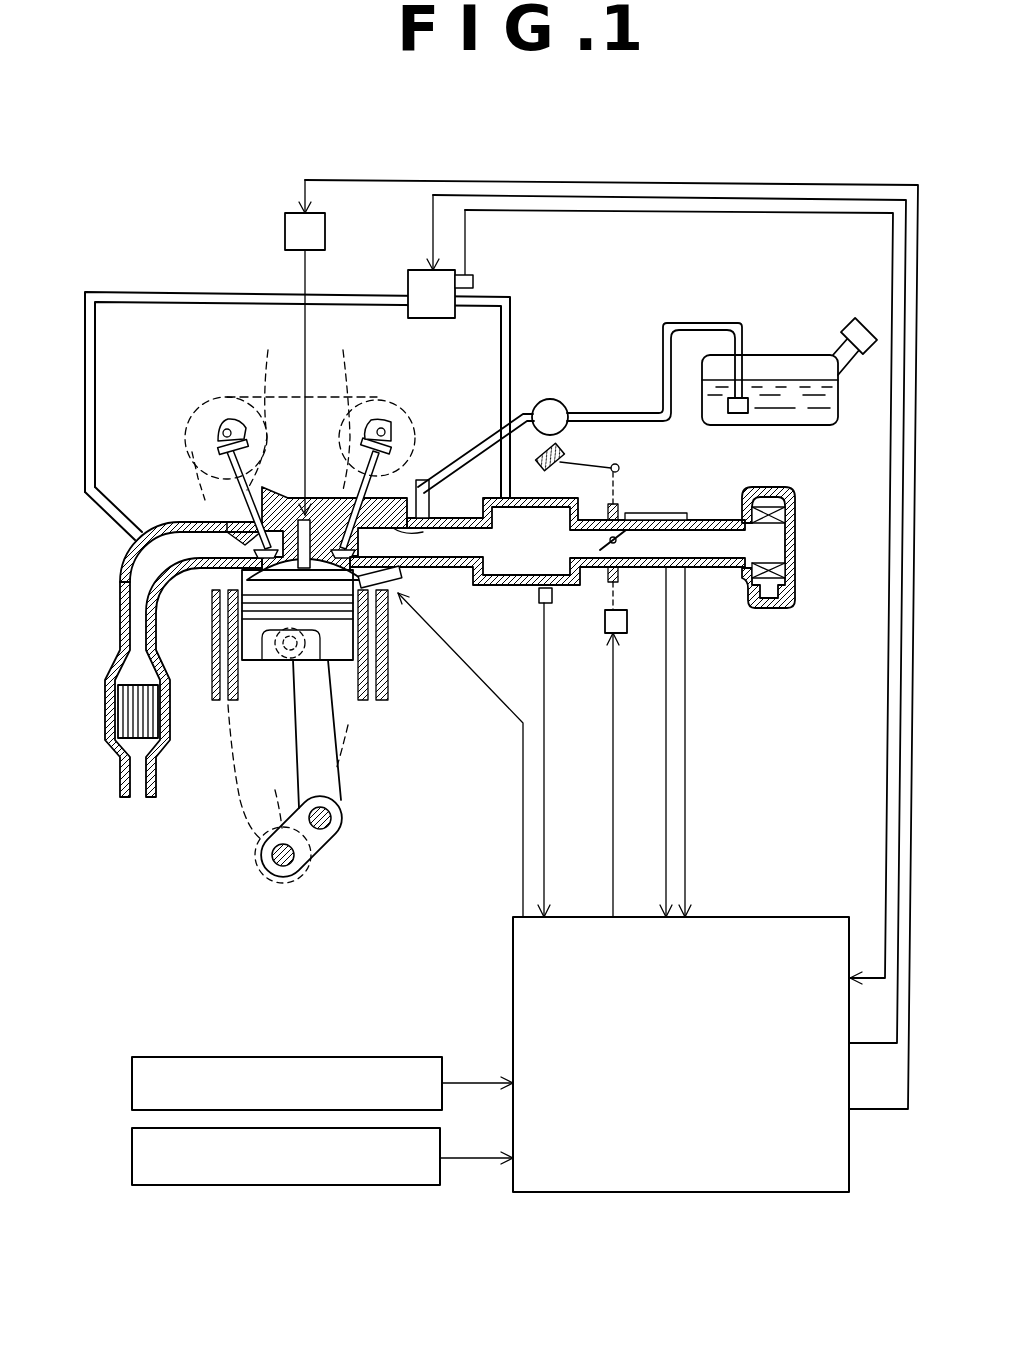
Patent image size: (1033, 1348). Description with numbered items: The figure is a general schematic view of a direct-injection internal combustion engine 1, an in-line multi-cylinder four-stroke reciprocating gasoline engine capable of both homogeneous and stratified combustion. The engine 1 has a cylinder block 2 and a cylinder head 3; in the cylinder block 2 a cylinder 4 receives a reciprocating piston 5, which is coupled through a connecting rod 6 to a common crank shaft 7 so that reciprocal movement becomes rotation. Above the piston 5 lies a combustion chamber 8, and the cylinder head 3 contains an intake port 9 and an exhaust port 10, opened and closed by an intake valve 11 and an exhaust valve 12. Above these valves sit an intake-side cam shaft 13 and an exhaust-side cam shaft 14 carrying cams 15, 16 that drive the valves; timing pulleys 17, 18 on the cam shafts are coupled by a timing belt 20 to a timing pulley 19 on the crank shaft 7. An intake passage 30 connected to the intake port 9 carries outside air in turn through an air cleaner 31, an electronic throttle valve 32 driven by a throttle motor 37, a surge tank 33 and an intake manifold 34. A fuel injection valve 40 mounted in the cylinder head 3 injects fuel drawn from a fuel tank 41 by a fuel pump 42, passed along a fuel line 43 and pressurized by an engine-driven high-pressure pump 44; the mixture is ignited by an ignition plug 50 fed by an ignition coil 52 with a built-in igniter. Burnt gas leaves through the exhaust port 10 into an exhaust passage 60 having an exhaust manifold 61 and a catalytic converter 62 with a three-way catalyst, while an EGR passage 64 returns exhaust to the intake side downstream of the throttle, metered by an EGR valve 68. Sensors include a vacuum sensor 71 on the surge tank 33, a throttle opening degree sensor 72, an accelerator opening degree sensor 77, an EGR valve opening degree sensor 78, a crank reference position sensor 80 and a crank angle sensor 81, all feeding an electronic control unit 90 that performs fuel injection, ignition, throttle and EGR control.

The internal combustion engine 1 is at (405, 658).
The cylinder block 2 is at (392, 687).
The cylinder head 3 is at (198, 515).
The cylinder 4 is at (353, 705).
The piston 5 is at (343, 655).
The connecting rod 6 is at (343, 760).
The crank shaft 7 is at (300, 862).
The combustion chamber 8 is at (276, 675).
The intake port 9 is at (448, 500).
The exhaust port 10 is at (197, 550).
The intake valve 11 is at (338, 465).
The exhaust valve 12 is at (244, 490).
The intake-side cam shaft 13 is at (392, 432).
The exhaust-side cam shaft 14 is at (218, 433).
The cam 15 is at (390, 430).
The cam 16 is at (228, 420).
The timing pulley 17 is at (366, 402).
The timing pulley 18 is at (281, 402).
The timing pulley 19 is at (288, 772).
The timing belt 20 is at (258, 853).
The intake passage 30 is at (587, 580).
The air cleaner 31 is at (756, 492).
The throttle valve 32 is at (612, 542).
The surge tank 33 is at (520, 588).
The intake manifold 34 is at (473, 575).
The throttle motor 37 is at (608, 655).
The fuel injection valve 40 is at (407, 593).
The fuel tank 41 is at (815, 427).
The fuel pump 42 is at (727, 406).
The fuel line 43 is at (700, 322).
The high-pressure pump 44 is at (568, 412).
The ignition plug 50 is at (283, 510).
The ignition coil 52 is at (326, 232).
The exhaust passage 60 is at (112, 620).
The exhaust manifold 61 is at (147, 530).
The catalytic converter 62 is at (96, 745).
The EGR passage 64 is at (188, 293).
The EGR valve 68 is at (408, 285).
The vacuum sensor 71 is at (543, 597).
The throttle opening degree sensor 72 is at (640, 577).
The accelerator opening degree sensor 77 is at (635, 517).
The EGR valve opening degree sensor 78 is at (473, 280).
The crank reference position sensor 80 is at (130, 1095).
The crank angle sensor 81 is at (130, 1168).
The electronic control unit (ECU) 90 is at (758, 915).